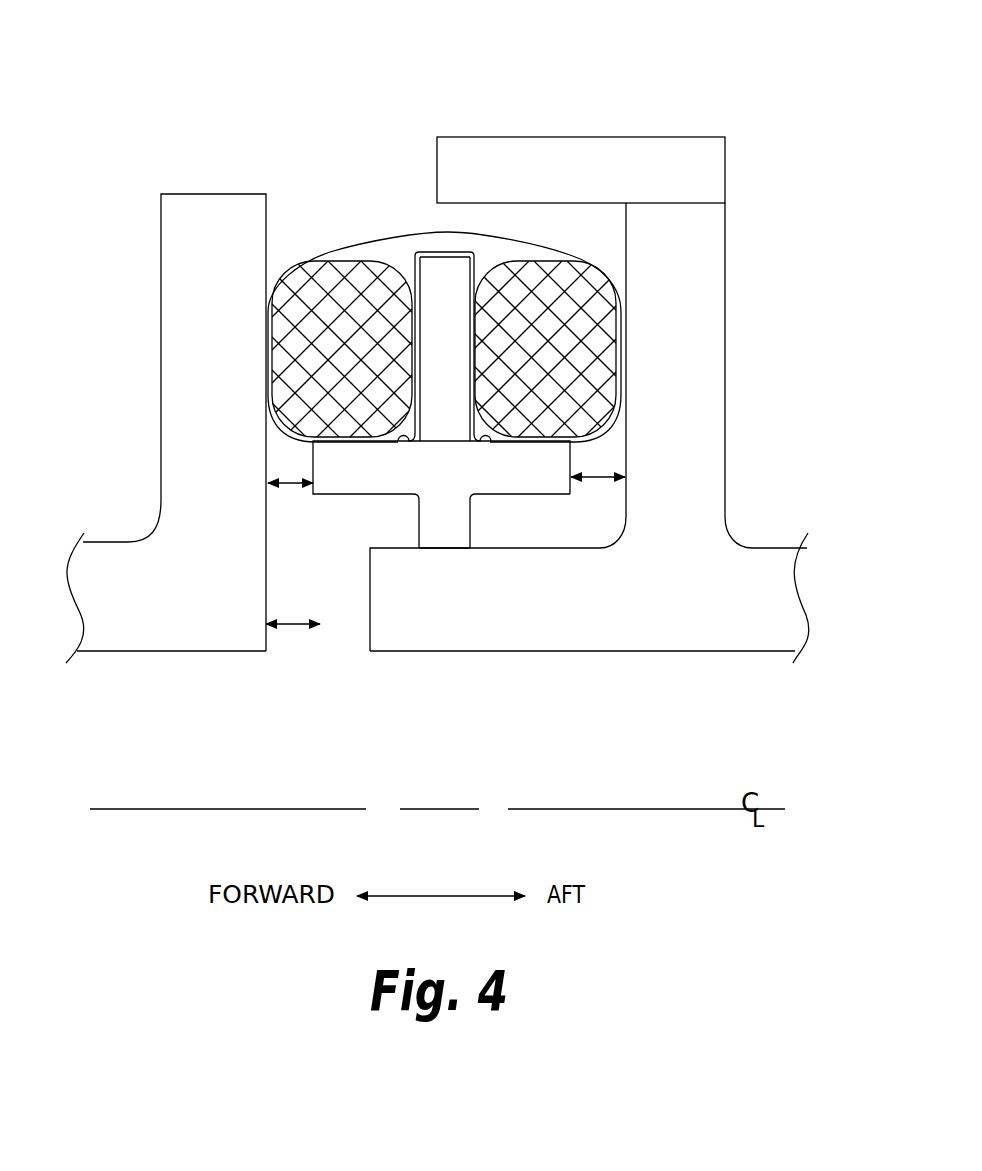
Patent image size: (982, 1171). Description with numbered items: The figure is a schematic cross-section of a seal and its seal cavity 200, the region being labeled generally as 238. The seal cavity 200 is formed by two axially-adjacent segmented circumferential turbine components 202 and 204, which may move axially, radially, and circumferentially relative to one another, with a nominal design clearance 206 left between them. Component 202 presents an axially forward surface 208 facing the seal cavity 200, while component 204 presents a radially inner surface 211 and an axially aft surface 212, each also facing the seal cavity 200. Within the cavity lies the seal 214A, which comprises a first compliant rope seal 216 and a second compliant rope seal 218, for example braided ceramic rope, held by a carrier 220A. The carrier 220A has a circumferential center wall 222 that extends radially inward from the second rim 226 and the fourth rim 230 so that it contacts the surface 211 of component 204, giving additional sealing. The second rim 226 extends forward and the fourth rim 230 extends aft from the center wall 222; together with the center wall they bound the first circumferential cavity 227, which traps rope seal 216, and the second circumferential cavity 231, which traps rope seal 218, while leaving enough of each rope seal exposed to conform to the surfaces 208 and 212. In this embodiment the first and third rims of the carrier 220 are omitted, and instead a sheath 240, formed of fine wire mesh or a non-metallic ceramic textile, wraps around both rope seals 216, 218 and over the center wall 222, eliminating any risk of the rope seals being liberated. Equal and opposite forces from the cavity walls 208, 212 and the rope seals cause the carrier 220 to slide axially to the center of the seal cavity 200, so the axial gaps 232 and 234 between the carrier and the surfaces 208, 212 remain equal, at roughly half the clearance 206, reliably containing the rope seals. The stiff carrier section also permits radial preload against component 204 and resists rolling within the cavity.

The seal region 238 is at (342, 25).
The seal cavity 200 is at (401, 140).
The carrier 220 is at (449, 229).
The sheath 240 is at (537, 248).
The seal 214A is at (365, 205).
The axially forward surface 208 is at (267, 220).
The axially aft surface 212 is at (626, 230).
The first compliant seal 216 is at (312, 329).
The second compliant seal 218 is at (577, 320).
The circumferential center wall 222 is at (445, 412).
The first circumferential cavity 227 is at (410, 441).
The second circumferential cavity 231 is at (479, 441).
The second rim 226 is at (353, 471).
The fourth rim 230 is at (533, 471).
The axial gap 232 is at (292, 482).
The axial gap 234 is at (598, 478).
The turbine component 202 is at (138, 651).
The turbine component 204 is at (478, 651).
The nominal design clearance 206 is at (292, 627).
The radially inner surface 211 is at (531, 548).
The carrier 220A is at (550, 495).